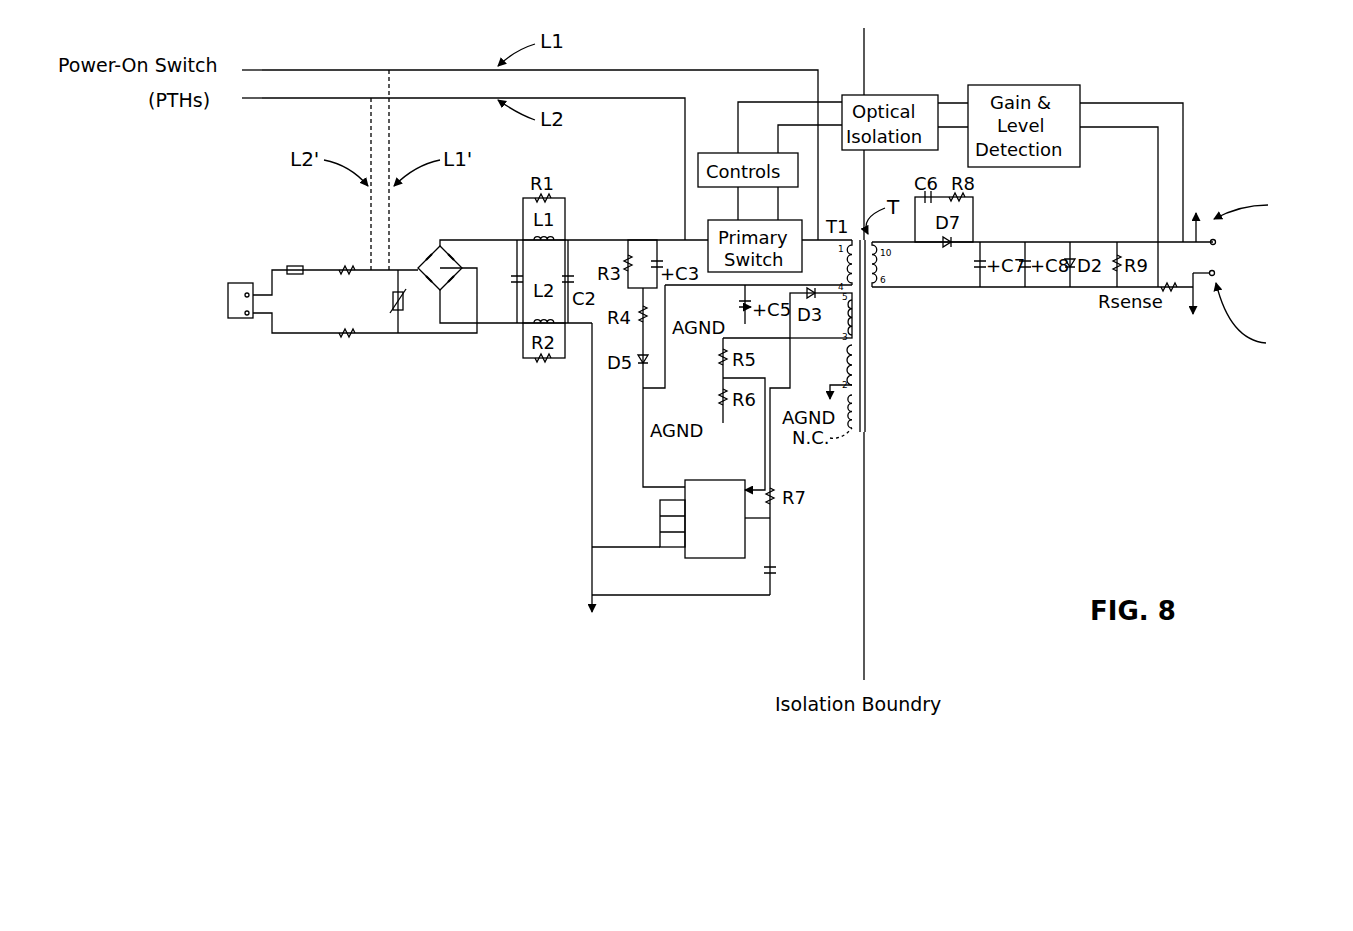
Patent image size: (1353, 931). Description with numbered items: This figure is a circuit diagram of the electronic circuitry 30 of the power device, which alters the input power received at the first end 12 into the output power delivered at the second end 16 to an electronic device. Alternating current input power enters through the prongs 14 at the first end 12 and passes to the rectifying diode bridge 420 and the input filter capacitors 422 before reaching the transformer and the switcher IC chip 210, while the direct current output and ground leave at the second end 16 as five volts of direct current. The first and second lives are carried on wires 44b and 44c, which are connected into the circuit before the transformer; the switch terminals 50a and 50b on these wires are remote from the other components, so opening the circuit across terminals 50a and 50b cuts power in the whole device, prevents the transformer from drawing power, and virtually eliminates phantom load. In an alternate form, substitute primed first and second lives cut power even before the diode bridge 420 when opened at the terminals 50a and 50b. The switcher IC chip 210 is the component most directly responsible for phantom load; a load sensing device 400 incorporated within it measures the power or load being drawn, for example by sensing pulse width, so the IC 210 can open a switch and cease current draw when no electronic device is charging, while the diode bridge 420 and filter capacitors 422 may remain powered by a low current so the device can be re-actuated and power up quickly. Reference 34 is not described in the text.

The first end 12 is at (291, 393).
The prongs 14 is at (250, 281).
The second end 16 is at (1214, 353).
The electronic circuitry 30 is at (516, 486).
The controller IC 34 is at (705, 548).
The wire 44b is at (350, 66).
The wire 44c is at (348, 102).
The switch terminal 50a is at (247, 60).
The switch terminal 50b is at (247, 102).
The switcher IC chip 210 is at (730, 577).
The load sensing device 400 is at (737, 526).
The rectifying diode bridge 420 is at (433, 222).
The input filter capacitors 422 is at (524, 287).